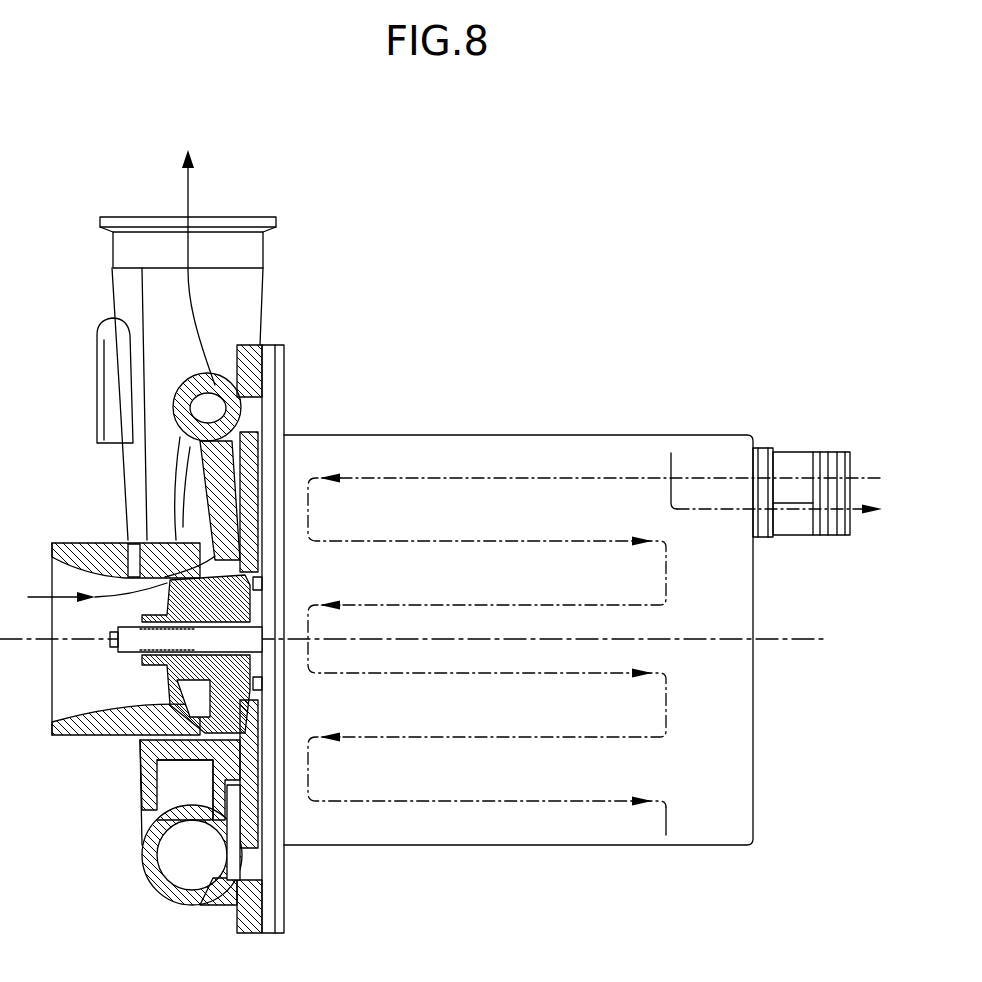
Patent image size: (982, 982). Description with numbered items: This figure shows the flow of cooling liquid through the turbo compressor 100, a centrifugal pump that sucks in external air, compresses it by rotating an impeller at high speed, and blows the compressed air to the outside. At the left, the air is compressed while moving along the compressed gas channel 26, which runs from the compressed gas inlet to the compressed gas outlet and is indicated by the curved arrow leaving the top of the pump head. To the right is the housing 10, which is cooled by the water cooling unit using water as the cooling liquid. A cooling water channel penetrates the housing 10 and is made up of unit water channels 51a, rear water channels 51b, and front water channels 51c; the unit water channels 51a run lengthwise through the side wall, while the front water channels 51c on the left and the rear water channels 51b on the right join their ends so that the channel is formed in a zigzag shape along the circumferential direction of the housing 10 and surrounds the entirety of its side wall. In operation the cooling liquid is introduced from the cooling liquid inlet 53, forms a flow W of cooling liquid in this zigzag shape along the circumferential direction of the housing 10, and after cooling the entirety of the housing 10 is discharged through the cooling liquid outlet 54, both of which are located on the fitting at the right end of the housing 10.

The turbo compressor 100 is at (96, 177).
The compressed gas channel 26 is at (190, 190).
The housing 10 is at (471, 420).
The unit water channels 51a is at (545, 478).
The flow of the cooling liquid W is at (617, 478).
The front water channels 51c is at (308, 652).
The rear water channels 51b is at (666, 578).
The cooling liquid inlet 53 is at (795, 458).
The cooling liquid outlet 54 is at (797, 530).